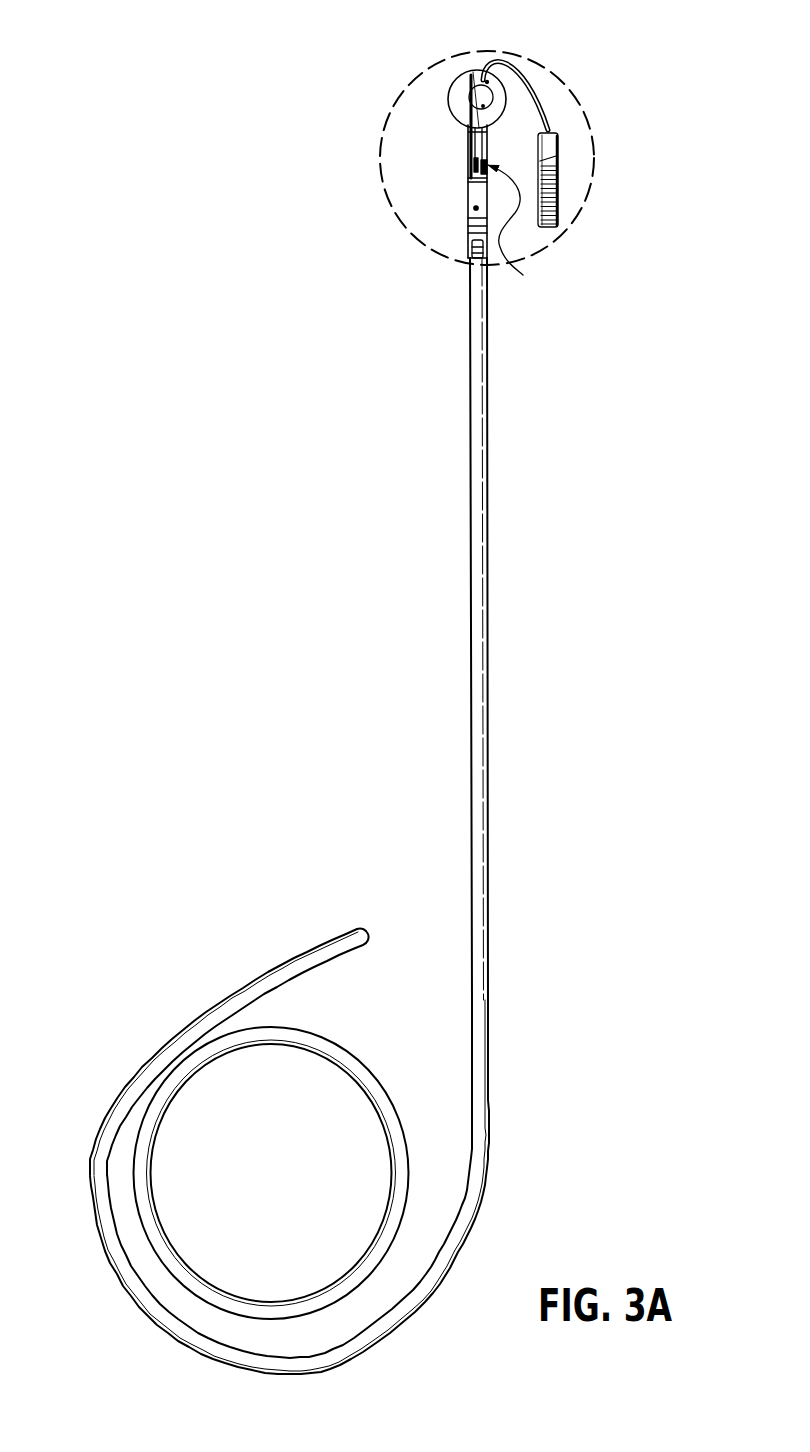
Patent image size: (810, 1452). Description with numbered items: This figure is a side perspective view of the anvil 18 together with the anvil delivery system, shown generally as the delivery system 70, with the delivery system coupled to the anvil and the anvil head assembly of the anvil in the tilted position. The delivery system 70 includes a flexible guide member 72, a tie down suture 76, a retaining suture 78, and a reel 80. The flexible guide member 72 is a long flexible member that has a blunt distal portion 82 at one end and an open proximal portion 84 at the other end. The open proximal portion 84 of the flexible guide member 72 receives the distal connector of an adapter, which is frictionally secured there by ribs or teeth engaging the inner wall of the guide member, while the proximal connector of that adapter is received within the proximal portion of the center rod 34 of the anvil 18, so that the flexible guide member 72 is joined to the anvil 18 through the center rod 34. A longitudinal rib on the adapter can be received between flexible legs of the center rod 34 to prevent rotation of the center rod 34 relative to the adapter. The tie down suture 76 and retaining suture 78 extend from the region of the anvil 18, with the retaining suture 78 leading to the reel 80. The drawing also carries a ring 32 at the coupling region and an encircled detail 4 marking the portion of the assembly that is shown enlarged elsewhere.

The detail region shown in FIG. 4 is at (553, 245).
The anvil 18 is at (467, 67).
The ring 32 is at (438, 89).
The center rod 34 is at (516, 229).
The delivery system 70 is at (490, 567).
The flexible guide member 72 is at (489, 862).
The tie down suture 76 is at (472, 161).
The retaining suture 78 is at (532, 78).
The reel 80 is at (562, 172).
The blunt distal portion 82 is at (358, 930).
The open proximal portion 84 is at (470, 247).